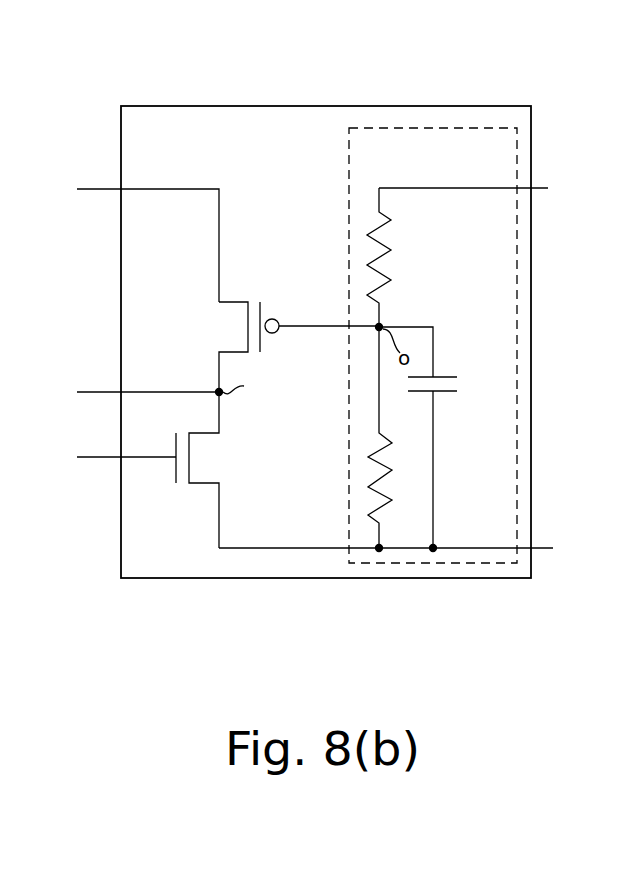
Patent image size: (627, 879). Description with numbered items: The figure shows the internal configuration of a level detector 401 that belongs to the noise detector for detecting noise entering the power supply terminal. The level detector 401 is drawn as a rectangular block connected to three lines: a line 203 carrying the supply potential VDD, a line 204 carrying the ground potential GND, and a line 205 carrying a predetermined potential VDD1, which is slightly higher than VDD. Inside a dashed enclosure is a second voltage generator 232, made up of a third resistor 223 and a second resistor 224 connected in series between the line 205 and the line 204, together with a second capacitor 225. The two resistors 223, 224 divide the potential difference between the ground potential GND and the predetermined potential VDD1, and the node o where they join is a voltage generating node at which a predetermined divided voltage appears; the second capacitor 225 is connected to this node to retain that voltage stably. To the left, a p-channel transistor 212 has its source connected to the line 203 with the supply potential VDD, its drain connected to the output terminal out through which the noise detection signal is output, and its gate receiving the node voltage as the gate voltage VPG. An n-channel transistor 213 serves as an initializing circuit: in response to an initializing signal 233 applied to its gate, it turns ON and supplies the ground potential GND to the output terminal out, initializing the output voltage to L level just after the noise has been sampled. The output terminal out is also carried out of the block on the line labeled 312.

The level detector 401 is at (306, 106).
The line with supply potential VDD 203 is at (148, 188).
The line with predetermined potential VDD1 205 is at (412, 187).
The p-channel transistor 212 is at (238, 305).
The n-channel transistor 213 is at (203, 433).
The output line 312 is at (107, 392).
The initializing signal 233 is at (107, 457).
The third resistor 223 is at (390, 241).
The second resistor 224 is at (365, 500).
The second capacitor 225 is at (450, 392).
The line with ground potential GND 204 is at (471, 548).
The second voltage generator 232 is at (438, 563).